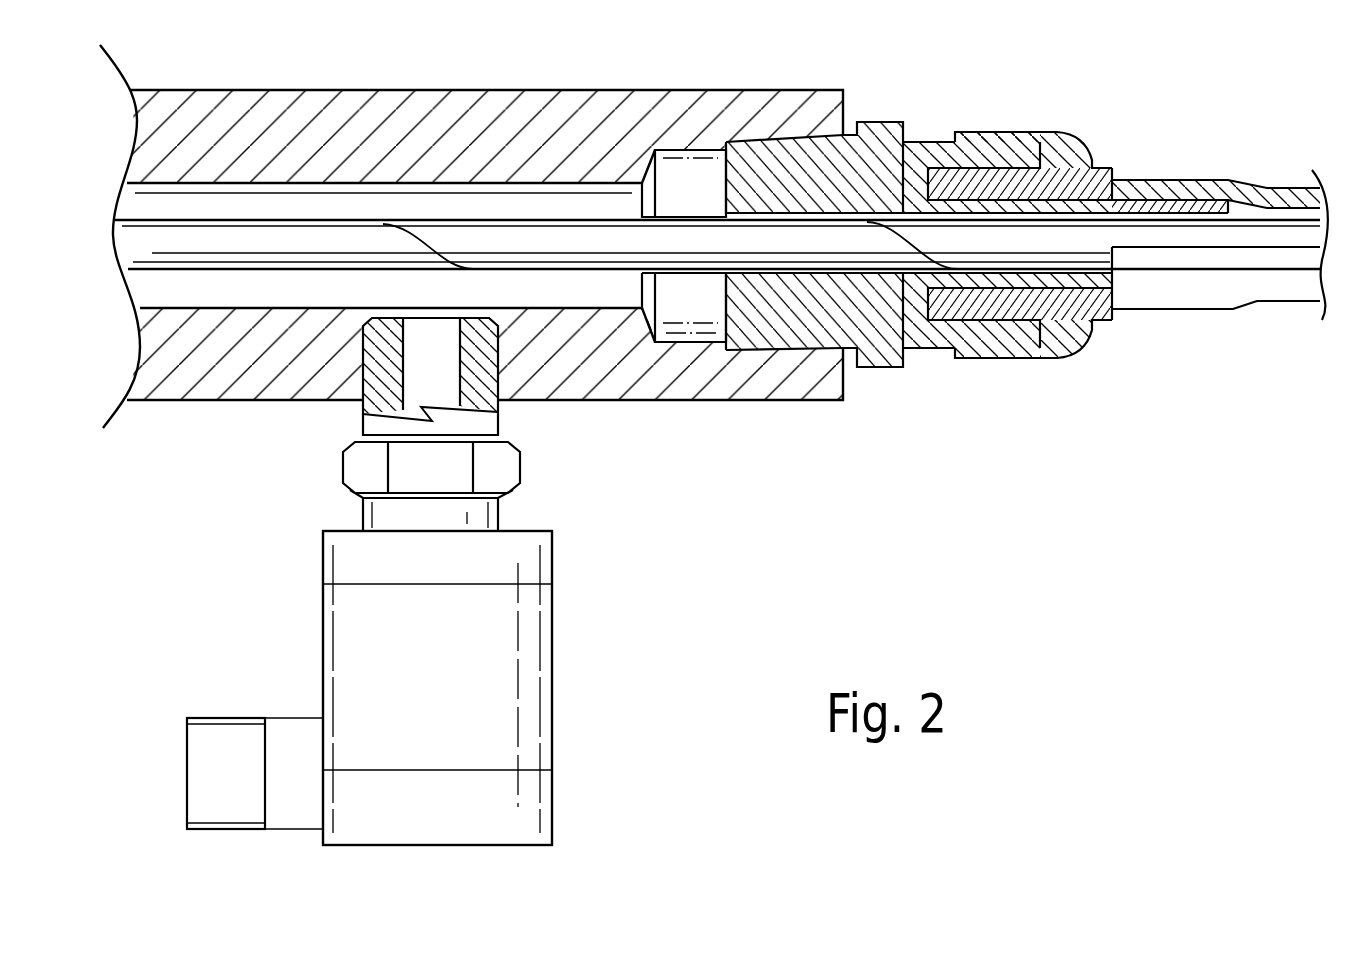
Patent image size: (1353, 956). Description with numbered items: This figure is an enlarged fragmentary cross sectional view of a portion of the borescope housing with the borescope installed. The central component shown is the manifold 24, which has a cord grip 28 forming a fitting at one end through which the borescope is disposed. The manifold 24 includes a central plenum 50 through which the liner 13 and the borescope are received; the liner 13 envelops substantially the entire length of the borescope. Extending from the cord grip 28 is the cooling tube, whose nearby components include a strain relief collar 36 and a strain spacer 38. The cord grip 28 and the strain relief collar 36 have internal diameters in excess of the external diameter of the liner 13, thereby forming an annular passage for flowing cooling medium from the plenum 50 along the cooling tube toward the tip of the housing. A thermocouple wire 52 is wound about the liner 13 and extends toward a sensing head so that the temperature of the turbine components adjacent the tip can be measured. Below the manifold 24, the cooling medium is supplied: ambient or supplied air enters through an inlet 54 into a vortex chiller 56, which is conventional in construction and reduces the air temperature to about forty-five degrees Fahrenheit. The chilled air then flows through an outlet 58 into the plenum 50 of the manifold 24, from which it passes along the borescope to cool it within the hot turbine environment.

The liner 13 is at (1095, 238).
The manifold 24 is at (327, 127).
The cord grip 28 is at (861, 342).
The strain relief collar 36 is at (915, 304).
The strain spacer 38 is at (1082, 186).
The central plenum 50 is at (513, 210).
The thermocouple wire 52 is at (396, 250).
The inlet 54 is at (212, 737).
The vortex chiller 56 is at (557, 672).
The outlet 58 is at (378, 377).